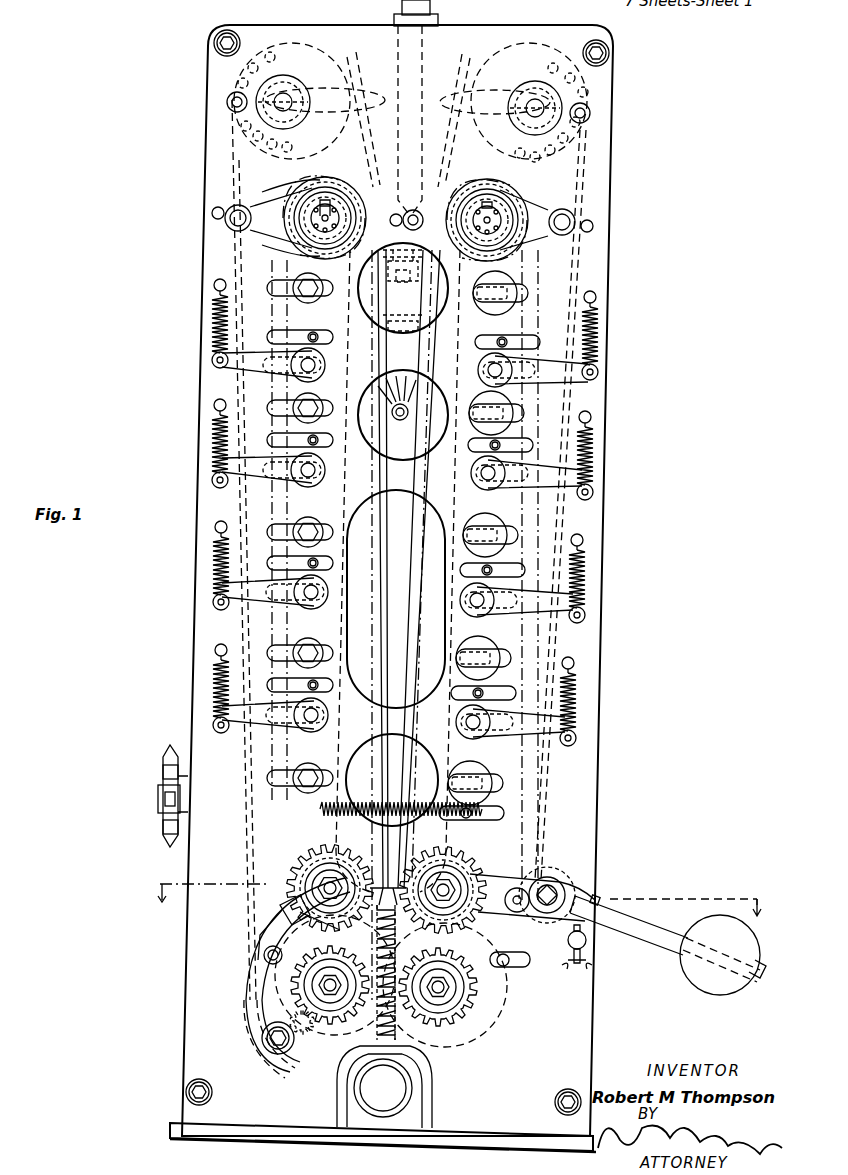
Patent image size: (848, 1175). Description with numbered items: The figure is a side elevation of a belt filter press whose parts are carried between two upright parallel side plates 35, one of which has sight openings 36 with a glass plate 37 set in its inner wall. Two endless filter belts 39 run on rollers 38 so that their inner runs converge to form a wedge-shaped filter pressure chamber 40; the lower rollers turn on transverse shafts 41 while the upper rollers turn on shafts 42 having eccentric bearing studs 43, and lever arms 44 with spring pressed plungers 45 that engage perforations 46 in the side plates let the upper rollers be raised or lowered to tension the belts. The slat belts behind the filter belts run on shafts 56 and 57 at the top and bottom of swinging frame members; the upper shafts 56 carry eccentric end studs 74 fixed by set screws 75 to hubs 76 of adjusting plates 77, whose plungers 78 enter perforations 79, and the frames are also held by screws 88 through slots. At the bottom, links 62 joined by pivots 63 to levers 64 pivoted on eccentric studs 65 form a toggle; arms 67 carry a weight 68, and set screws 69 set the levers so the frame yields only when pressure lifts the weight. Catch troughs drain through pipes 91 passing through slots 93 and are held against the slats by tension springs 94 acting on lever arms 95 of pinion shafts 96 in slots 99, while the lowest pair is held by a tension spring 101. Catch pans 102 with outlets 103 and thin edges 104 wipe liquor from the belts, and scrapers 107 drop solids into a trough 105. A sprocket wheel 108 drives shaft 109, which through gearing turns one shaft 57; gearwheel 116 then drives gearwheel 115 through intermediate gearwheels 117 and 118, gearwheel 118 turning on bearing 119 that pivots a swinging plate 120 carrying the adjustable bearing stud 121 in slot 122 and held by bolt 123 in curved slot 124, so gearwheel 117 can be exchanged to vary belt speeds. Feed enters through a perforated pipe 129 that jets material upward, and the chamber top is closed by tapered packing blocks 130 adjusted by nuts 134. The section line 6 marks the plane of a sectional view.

The section line 6- 6 is at (456, 895).
The side plates 35 is at (594, 505).
The sight openings 36 is at (360, 495).
The glass plate 37 is at (452, 504).
The pulleys or rollers 38 is at (314, 150).
The endless filter belts 39 is at (404, 575).
The filter pressure chamber 40 is at (400, 530).
The transverse shafts 41 is at (460, 1030).
The transverse shafts 42 is at (298, 92).
The eccentric bearing studs 43 is at (283, 95).
The lever arms 44 is at (366, 97).
The spring pressed plungers 45 is at (227, 102).
The perforations 46 is at (260, 55).
The shafts 56 is at (312, 236).
The shafts 57 is at (330, 870).
The links 62 is at (509, 895).
The pivots 63 is at (524, 880).
The levers 64 is at (578, 890).
The eccentric pins or studs 65 is at (552, 880).
The separable arms 67 is at (652, 938).
The weight 68 is at (695, 975).
The set screws 69 is at (586, 940).
The eccentric end studs 74 is at (326, 230).
The set screws 75 is at (318, 195).
The hubs 76 is at (335, 205).
The adjusting plates 77 is at (262, 200).
The spring pressed plungers 78 is at (230, 225).
The perforations 79 is at (214, 208).
The screws 88 is at (310, 482).
The outlet or drain pipes 91 is at (316, 333).
The slots 93 is at (270, 337).
The tension springs 94 is at (212, 563).
The lever arms 95 is at (215, 603).
The shafts 96 is at (480, 378).
The slots 99 is at (275, 485).
The tension spring 101 is at (362, 800).
The catch pans 102 is at (258, 934).
The outlets 103 is at (262, 962).
The thin edges 104 is at (395, 919).
The trough 105 is at (396, 1095).
The scrapers 107 is at (392, 1055).
The sprocket wheel 108 is at (170, 752).
The shaft 109 is at (160, 796).
The gearwheel 115 is at (430, 855).
The gearwheel 116 is at (302, 850).
The intermediate gearwheel 117 is at (330, 1025).
The intermediate gearwheel 118 is at (452, 1040).
The bearing 119 is at (440, 980).
The swinging plate 120 is at (250, 998).
The bearing stud 121 is at (335, 975).
The slot 122 is at (304, 1018).
The bolt 123 is at (272, 1050).
The curved slot 124 is at (270, 915).
The pipe 129 is at (397, 418).
The packing blocks or plugs 130 is at (415, 311).
The nuts 134 is at (438, 10).